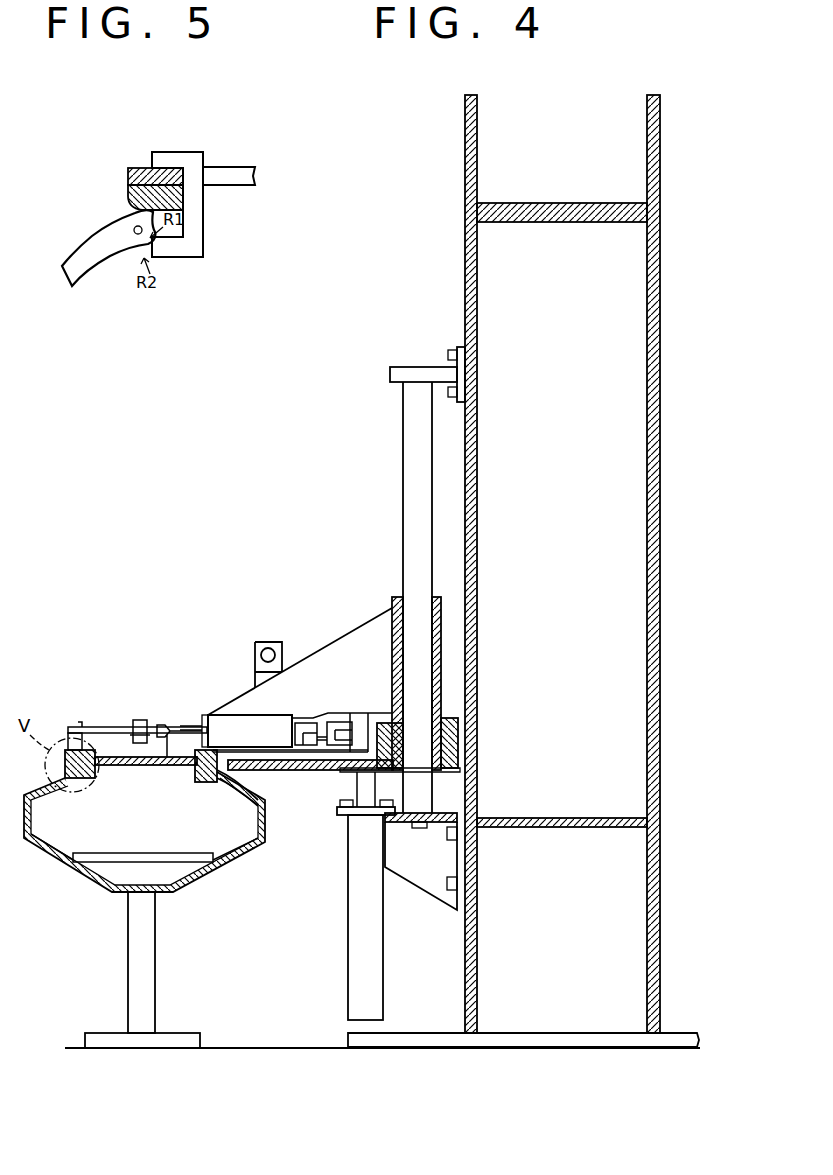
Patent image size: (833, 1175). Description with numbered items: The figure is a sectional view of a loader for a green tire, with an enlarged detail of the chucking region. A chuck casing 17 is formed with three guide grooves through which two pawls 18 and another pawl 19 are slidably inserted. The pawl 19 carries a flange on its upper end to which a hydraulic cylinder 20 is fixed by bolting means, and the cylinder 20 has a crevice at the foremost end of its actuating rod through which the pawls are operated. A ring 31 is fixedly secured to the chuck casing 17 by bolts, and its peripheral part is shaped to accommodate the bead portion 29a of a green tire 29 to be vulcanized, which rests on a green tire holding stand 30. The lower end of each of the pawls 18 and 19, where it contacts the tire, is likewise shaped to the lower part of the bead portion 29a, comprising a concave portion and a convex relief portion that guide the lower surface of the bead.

In FIG. 5, the chuck casing 17 is at (128, 175).
In FIG. 4, the chuck casing 17 is at (136, 765).
In FIG. 5, the pawls 18 is at (190, 258).
In FIG. 4, the pawls 18 is at (93, 778).
In FIG. 5, the pawl 19 is at (203, 238).
In FIG. 4, the pawl 19 is at (196, 772).
In FIG. 4, the hydraulic cylinder 20 is at (266, 715).
In FIG. 5, the green tire 29 is at (85, 244).
In FIG. 4, the green tire 29 is at (265, 830).
In FIG. 4, the bead portion 29a is at (210, 782).
In FIG. 4, the green tire holding stand 30 is at (205, 877).
In FIG. 5, the ring 31 is at (128, 200).
In FIG. 4, the ring 31 is at (255, 770).